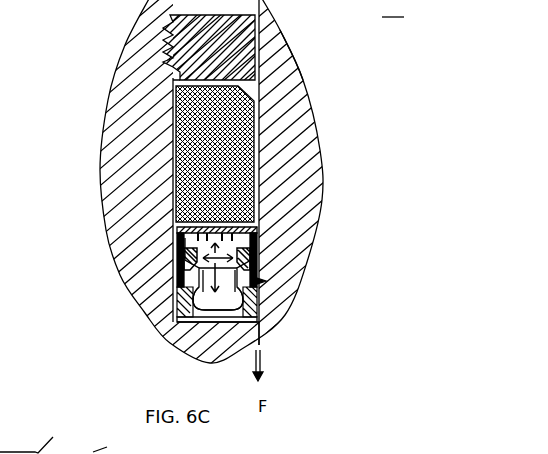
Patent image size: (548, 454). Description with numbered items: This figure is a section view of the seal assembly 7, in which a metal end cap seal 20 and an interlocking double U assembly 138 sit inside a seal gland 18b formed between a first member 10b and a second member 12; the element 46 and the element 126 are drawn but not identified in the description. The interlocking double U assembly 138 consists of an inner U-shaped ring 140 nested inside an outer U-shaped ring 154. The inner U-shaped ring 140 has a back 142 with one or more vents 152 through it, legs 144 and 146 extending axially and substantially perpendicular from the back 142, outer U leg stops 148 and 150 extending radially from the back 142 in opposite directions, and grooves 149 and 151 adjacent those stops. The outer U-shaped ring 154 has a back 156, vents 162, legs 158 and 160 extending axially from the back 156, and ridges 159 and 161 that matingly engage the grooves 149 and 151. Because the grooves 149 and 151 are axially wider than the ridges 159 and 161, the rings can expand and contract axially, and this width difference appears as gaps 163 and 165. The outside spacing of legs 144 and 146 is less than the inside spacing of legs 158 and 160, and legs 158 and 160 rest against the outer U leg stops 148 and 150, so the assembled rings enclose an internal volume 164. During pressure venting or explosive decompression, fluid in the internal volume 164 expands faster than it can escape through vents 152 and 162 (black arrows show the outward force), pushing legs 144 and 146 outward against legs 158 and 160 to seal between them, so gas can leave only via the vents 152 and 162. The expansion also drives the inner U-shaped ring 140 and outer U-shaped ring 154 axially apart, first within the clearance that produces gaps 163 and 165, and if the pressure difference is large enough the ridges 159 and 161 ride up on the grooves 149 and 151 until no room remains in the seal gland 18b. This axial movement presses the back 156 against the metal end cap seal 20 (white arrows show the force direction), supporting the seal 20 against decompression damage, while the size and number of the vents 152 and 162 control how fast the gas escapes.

The seal assembly 7 is at (393, 9).
The first member 10b is at (110, 135).
The second member 12 is at (112, 446).
The seal gland 18b is at (258, 88).
The metal end cap seal 20 is at (253, 133).
The strap 46 is at (40, 439).
The socket wall 126 is at (312, 163).
The interlocking double U assembly 138 is at (155, 321).
The inner U-shaped ring 140 is at (260, 309).
The back 142 is at (258, 330).
The leg 144 is at (190, 259).
The leg 146 is at (258, 265).
The outer U leg stop 148 is at (160, 312).
The groove 149 is at (172, 274).
The outer U leg stop 150 is at (258, 299).
The groove 151 is at (258, 272).
The vents 152 is at (205, 352).
The outer U-shaped ring 154 is at (258, 250).
The back 156 is at (172, 205).
The leg 158 is at (176, 244).
The ridge 159 is at (175, 290).
The leg 160 is at (258, 233).
The ridge 161 is at (266, 281).
The vents 162 is at (173, 230).
The gap 163 is at (173, 304).
The internal volume 164 is at (178, 327).
The gap 165 is at (258, 291).